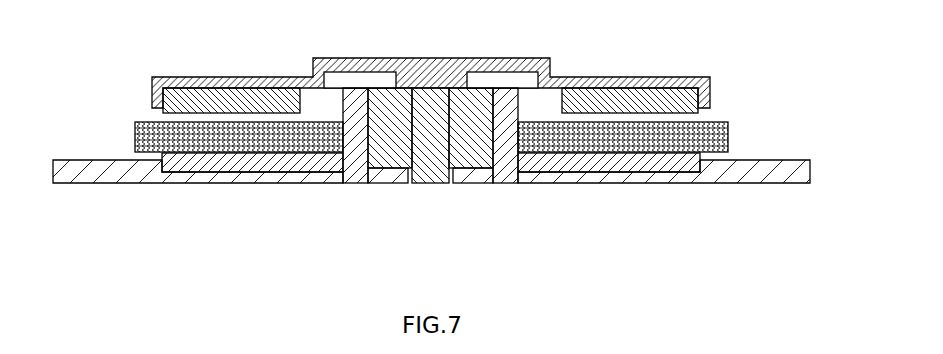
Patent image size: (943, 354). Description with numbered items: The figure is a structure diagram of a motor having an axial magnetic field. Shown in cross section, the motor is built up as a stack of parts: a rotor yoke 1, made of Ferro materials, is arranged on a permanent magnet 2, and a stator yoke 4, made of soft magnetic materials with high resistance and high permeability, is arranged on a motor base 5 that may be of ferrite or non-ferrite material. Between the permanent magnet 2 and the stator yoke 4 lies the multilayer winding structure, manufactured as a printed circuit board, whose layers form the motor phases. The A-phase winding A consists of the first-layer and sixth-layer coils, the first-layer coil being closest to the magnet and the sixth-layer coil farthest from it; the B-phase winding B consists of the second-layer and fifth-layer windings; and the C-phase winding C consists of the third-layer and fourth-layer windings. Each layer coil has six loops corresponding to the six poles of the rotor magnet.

The rotor yoke 1 is at (373, 65).
The permanent magnet 2 is at (623, 93).
The stator yoke 4 is at (577, 165).
The motor base 5 is at (755, 175).
The A-phase winding A is at (145, 123).
The B-phase winding B is at (133, 130).
The C-phase winding C is at (133, 142).